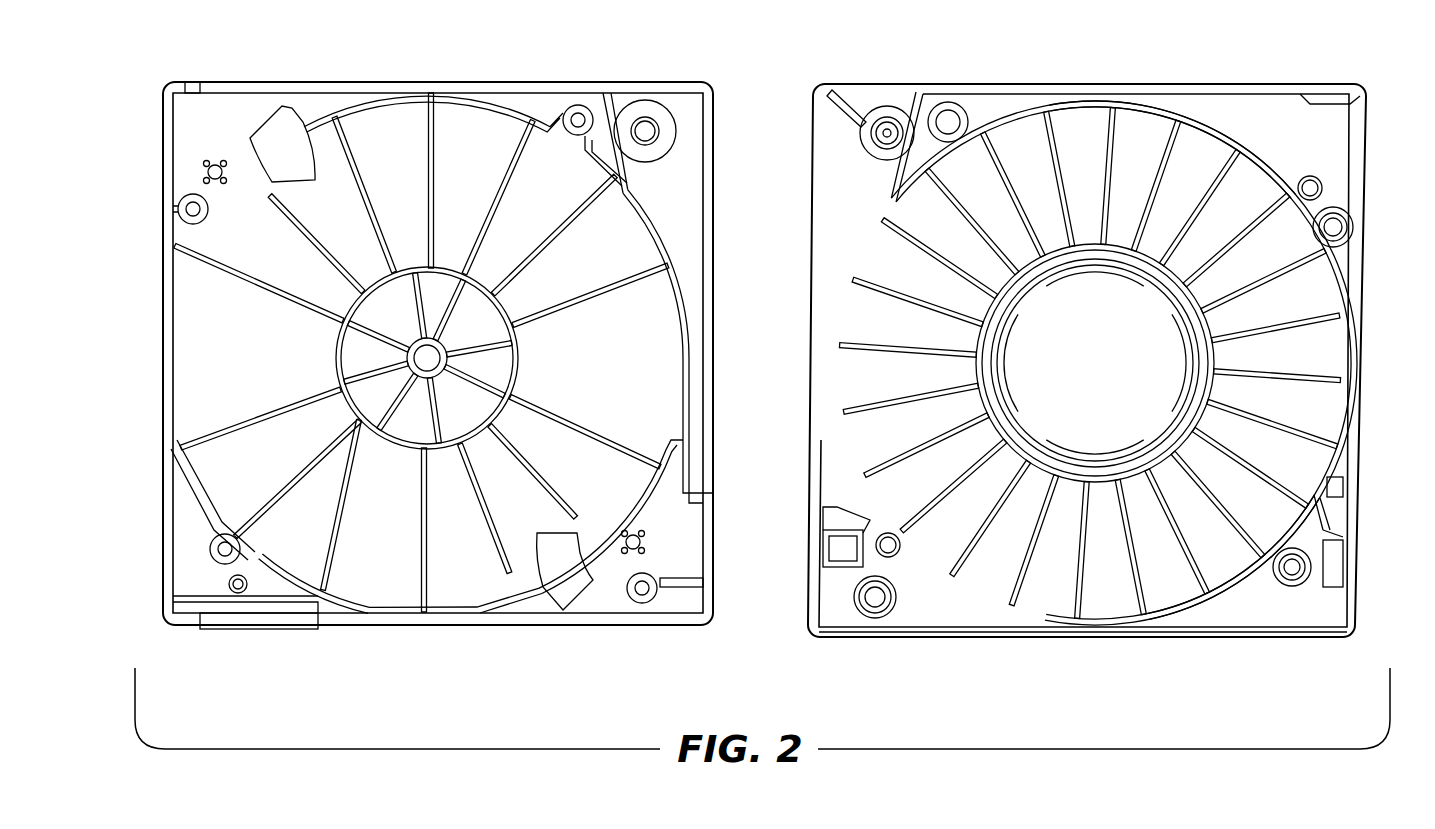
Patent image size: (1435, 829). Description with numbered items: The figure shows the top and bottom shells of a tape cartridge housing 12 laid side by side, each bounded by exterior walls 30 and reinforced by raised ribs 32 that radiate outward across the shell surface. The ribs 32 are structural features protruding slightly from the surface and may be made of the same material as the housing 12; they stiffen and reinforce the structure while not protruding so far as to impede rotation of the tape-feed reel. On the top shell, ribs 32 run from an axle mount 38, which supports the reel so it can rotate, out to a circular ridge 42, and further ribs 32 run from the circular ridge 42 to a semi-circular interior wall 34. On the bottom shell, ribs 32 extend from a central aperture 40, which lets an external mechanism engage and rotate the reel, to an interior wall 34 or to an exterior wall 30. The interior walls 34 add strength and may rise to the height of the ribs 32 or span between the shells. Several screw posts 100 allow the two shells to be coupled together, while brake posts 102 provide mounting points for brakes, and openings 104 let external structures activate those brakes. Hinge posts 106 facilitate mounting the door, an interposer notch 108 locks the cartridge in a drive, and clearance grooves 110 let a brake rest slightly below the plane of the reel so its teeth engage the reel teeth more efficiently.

The housing 12 is at (680, 81).
The exterior walls 30 is at (305, 630).
The raised ribs 32 is at (490, 560).
The interior walls 34 is at (497, 97).
The axle mount 38 is at (415, 358).
The central aperture 40 is at (1035, 380).
The circular ridge 42 is at (440, 358).
The screw posts 100 is at (576, 107).
The brake posts 102 is at (207, 168).
The openings 104 is at (197, 82).
The hinge posts 106 is at (662, 148).
The interposer notch 108 is at (1345, 550).
The clearance grooves 110 is at (282, 110).